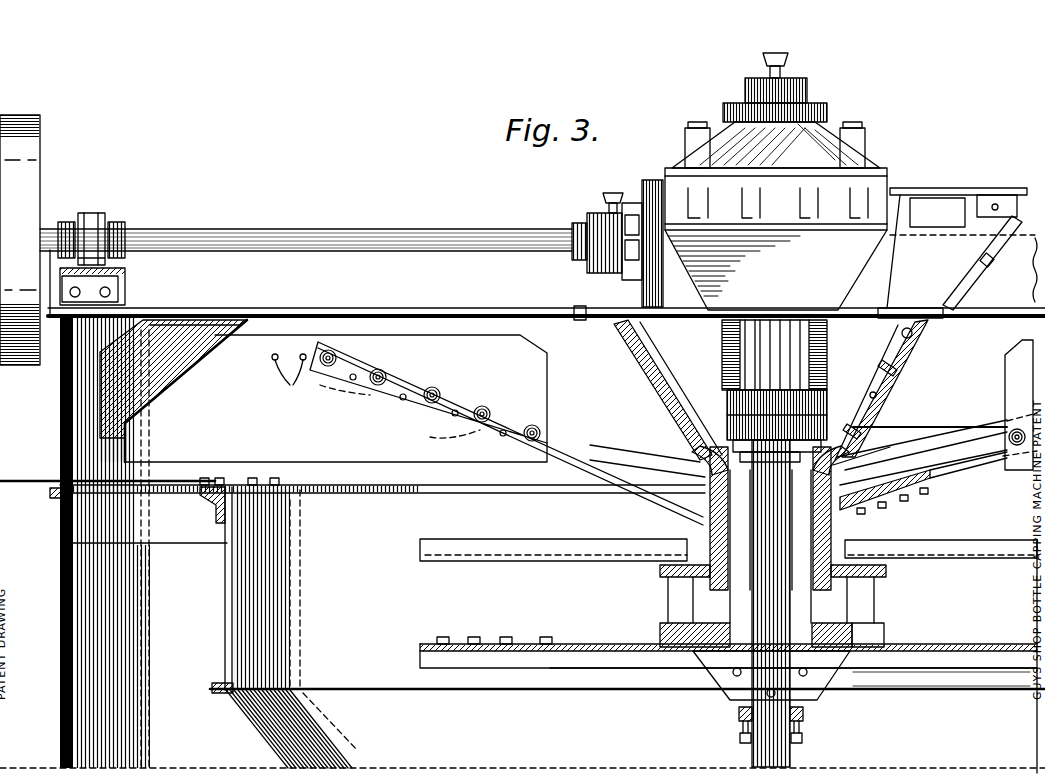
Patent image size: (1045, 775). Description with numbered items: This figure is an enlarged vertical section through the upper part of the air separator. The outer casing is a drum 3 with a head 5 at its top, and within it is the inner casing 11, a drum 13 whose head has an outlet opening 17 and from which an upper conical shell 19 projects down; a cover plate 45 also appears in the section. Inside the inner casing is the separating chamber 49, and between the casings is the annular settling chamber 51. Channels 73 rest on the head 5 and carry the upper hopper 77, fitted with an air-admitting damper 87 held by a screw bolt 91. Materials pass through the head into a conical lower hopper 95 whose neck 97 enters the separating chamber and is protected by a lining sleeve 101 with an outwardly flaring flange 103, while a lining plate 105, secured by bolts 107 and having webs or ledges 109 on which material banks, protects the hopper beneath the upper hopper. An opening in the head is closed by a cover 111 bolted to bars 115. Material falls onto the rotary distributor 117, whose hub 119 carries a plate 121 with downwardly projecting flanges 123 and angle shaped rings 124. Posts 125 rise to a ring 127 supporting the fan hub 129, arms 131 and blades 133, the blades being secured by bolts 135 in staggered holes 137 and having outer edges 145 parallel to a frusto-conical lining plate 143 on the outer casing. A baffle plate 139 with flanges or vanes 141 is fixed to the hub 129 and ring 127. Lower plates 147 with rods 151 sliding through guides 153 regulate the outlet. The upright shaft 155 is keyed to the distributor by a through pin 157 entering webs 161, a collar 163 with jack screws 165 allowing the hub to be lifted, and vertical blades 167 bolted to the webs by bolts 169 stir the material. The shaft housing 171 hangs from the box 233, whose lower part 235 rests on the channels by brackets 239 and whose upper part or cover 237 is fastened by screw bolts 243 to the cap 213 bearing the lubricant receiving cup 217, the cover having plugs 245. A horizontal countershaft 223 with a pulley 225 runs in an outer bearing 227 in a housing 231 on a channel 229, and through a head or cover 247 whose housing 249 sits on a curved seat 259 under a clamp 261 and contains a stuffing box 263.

The drum 3 is at (60, 637).
The head 5 is at (312, 308).
The inner casing 11 is at (219, 660).
The drum 13 is at (224, 576).
The outlet opening 17 is at (482, 495).
The upper conical shell 19 is at (260, 716).
The cover plate 45 is at (352, 494).
The separating chamber 49 is at (314, 595).
The settling chamber 51 is at (185, 611).
The channels 73 is at (415, 262).
The upper hopper 77 is at (975, 200).
The damper 87 is at (955, 295).
The screw bolt 91 is at (990, 265).
The lower hopper 95 is at (931, 362).
The neck 97 is at (948, 472).
The lining sleeve 101 is at (987, 426).
The outwardly flaring flange 103 is at (922, 434).
The lining plate 105 is at (876, 396).
The bolts 107 is at (902, 334).
The webs or ledges 109 is at (885, 365).
The cover 111 is at (622, 290).
The bars 115 is at (600, 320).
The rotary distributor 117 is at (419, 626).
The hub 119 is at (700, 670).
The plate 121 is at (420, 647).
The downwardly projecting flanges 123 is at (425, 663).
The angle shaped rings 124 is at (546, 637).
The posts 125 is at (680, 608).
The ring 127 is at (662, 574).
The hub 129 is at (708, 529).
The arms 131 is at (578, 465).
The blades 133 is at (538, 392).
The bolts 135 is at (400, 382).
The staggered holes 137 is at (440, 428).
The baffle plate 139 is at (442, 565).
The flanges or vanes 141 is at (440, 550).
The frusto-conical lining plate 143 is at (150, 398).
The outer edges 145 is at (175, 378).
The lower plates 147 is at (312, 485).
The rod 151 is at (107, 463).
The guide 153 is at (50, 492).
The upright shaft 155 is at (858, 545).
The through pin 157 is at (757, 702).
The webs 161 is at (835, 676).
The collar 163 is at (805, 714).
The jack screws 165 is at (741, 738).
The vertical blades 167 is at (728, 601).
The bolts 169 is at (768, 693).
The housing 171 is at (742, 356).
The cap 213 is at (808, 92).
The lubricant receiving cup 217 is at (790, 60).
The horizontal countershaft 223 is at (340, 233).
The pulley 225 is at (40, 155).
The outer bearing 227 is at (122, 223).
The channel 229 is at (128, 279).
The housing 231 is at (92, 213).
The box 233 is at (889, 271).
The lower part 235 is at (888, 285).
The upper part or cover 237 is at (832, 160).
The brackets 239 is at (776, 199).
The screw bolts 243 is at (742, 107).
The plugs 245 is at (700, 128).
The head or cover 247 is at (650, 180).
The housing 249 is at (600, 212).
The curved seat 259 is at (579, 306).
The clamp 261 is at (612, 193).
The stuffing box 263 is at (574, 230).